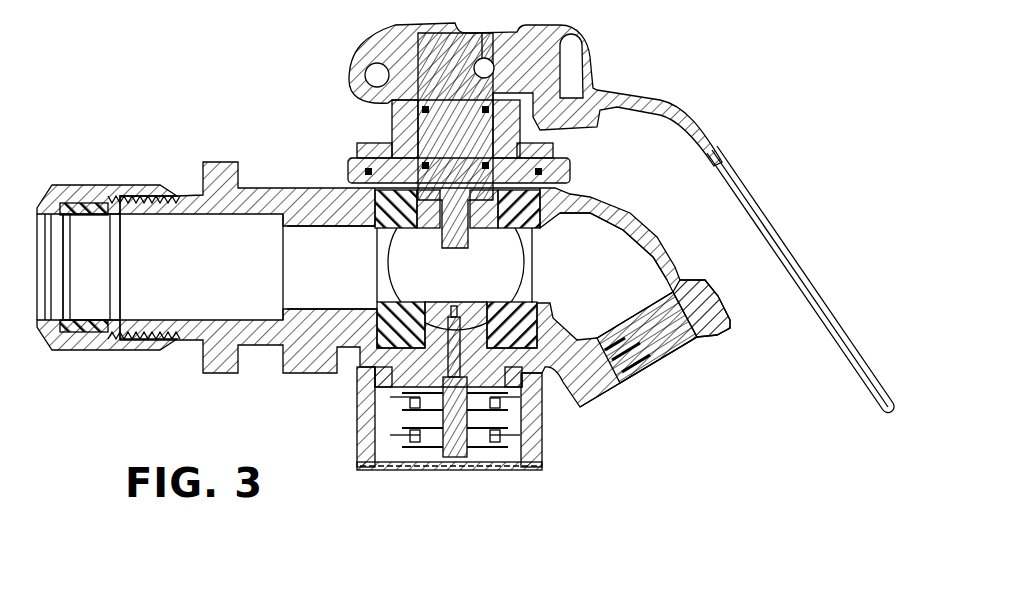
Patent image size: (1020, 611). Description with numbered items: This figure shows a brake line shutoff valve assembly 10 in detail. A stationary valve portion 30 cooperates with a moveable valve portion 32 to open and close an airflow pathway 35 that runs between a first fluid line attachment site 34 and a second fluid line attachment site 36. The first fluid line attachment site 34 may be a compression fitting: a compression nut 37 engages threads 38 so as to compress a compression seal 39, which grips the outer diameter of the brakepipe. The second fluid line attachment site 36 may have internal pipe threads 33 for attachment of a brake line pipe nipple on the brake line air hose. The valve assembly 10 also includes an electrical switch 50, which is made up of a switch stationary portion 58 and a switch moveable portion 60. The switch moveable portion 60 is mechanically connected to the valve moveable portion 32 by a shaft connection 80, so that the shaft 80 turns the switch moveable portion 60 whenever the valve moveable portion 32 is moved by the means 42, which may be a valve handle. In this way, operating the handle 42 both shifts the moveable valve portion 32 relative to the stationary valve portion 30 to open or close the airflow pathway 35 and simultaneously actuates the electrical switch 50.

The brake line shutoff valve assembly 10 is at (235, 100).
The stationary valve portion 30 is at (548, 374).
The moveable valve portion 32 is at (350, 212).
The internal pipe threads 33 is at (663, 347).
The first fluid line attachment site 34 is at (70, 274).
The airflow pathway 35 is at (257, 226).
The second fluid line attachment site 36 is at (642, 396).
The compression nut 37 is at (76, 193).
The threads 38 is at (140, 195).
The compression seal 39 is at (82, 332).
The means for moving the valve moveable portion 42 is at (748, 196).
The electrical switch 50 is at (519, 485).
The switch stationary portion 58 is at (397, 405).
The switch moveable portion 60 is at (431, 450).
The shaft connection 80 is at (392, 373).